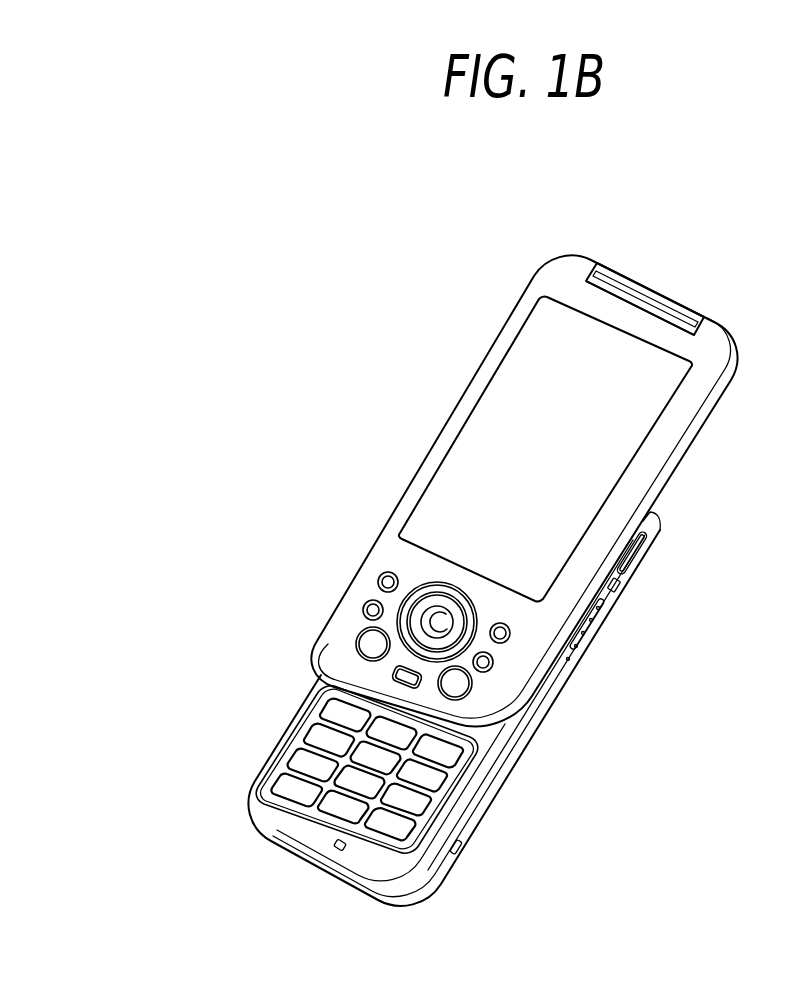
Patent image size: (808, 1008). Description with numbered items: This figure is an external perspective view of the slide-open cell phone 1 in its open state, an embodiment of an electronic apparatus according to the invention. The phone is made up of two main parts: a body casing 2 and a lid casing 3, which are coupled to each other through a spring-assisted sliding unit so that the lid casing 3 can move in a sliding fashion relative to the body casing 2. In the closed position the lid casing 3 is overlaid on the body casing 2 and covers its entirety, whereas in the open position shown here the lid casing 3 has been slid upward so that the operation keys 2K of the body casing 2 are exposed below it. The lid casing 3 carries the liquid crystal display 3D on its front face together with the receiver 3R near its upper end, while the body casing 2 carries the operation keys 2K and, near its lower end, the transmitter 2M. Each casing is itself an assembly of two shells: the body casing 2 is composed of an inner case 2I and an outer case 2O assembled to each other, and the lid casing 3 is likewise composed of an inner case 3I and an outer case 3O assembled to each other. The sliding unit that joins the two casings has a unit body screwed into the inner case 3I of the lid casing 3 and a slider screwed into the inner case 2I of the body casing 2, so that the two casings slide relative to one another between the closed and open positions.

The slide-open cell phone 1 is at (387, 440).
The body casing 2 is at (620, 587).
The lid casing 3 is at (555, 252).
The liquid crystal display 3D is at (500, 417).
The receiver 3R is at (657, 303).
The outer case 3O is at (717, 340).
The inner case 3I is at (713, 400).
The operation keys 2K is at (330, 738).
The inner case 2I is at (272, 762).
The transmitter 2M is at (333, 843).
The outer case 2O is at (478, 812).